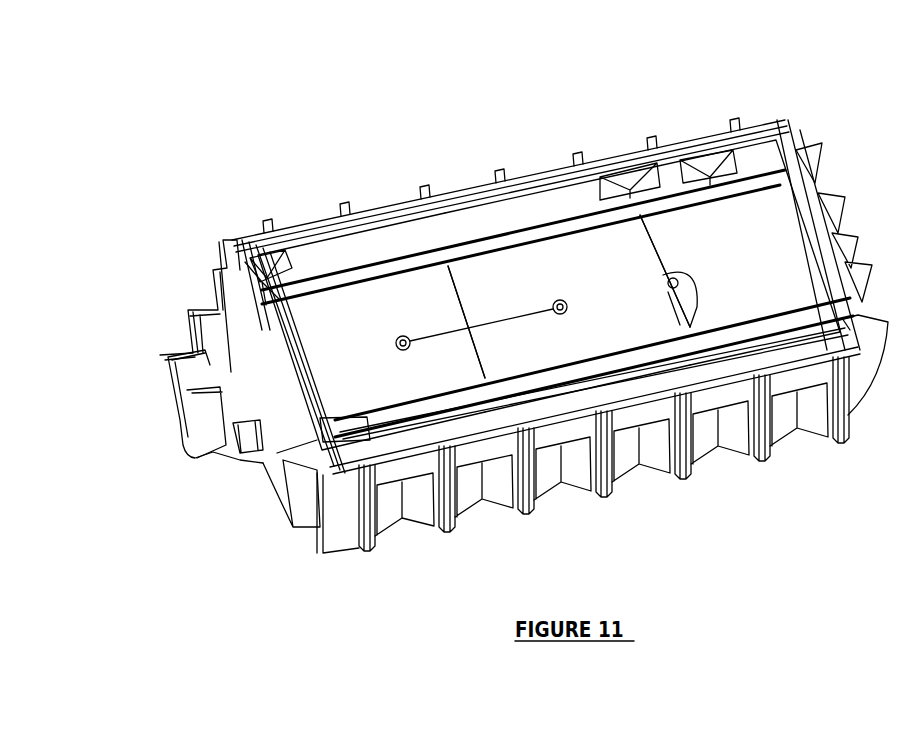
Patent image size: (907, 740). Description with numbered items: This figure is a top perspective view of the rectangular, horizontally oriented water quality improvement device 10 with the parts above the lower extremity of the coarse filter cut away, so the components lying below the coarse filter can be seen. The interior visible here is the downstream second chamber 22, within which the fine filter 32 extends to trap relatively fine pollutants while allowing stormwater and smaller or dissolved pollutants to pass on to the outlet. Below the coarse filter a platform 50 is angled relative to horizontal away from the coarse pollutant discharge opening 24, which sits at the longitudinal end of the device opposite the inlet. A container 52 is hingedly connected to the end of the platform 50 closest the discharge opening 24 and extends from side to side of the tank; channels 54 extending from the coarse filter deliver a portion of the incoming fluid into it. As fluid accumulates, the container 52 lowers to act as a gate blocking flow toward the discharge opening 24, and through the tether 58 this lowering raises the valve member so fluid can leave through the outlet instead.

The water quality improvement device 10 is at (171, 131).
The second region/chamber 22 is at (733, 253).
The coarse pollutant discharge opening 24 is at (185, 440).
The fine filter 32 is at (547, 277).
The platform 50 is at (366, 315).
The container 52 is at (268, 290).
The channels 54 is at (593, 238).
The tether 58 is at (443, 337).